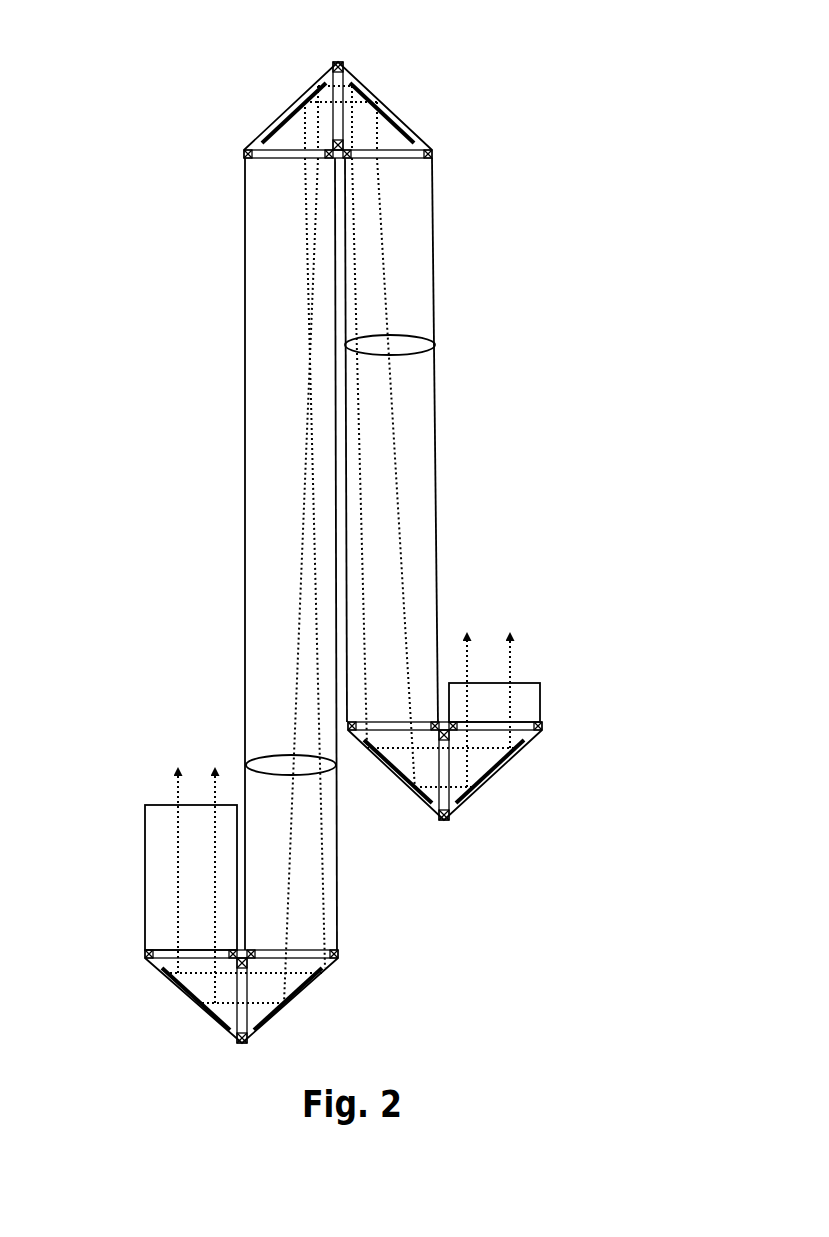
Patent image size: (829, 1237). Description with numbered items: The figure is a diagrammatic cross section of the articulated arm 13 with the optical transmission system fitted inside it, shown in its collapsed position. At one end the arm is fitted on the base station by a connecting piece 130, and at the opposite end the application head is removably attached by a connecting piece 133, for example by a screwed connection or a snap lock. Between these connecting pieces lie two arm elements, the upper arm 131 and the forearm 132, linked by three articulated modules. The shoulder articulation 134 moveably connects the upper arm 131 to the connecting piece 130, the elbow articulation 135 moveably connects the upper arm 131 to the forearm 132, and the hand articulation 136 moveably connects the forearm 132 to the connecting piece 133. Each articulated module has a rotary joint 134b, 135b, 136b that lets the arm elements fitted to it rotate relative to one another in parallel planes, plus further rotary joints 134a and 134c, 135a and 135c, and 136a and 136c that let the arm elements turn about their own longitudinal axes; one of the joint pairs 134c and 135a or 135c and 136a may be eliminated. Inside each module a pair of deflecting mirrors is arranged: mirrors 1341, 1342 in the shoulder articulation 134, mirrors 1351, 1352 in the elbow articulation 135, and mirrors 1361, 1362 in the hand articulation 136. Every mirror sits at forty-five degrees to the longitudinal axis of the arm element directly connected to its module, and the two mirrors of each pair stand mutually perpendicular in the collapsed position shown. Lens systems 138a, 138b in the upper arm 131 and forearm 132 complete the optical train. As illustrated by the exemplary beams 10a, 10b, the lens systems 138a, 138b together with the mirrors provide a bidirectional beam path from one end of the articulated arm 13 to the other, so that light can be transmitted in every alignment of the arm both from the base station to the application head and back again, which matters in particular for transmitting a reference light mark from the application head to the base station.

The articulated arm 13 is at (170, 618).
The connecting piece 130 is at (533, 695).
The upper arm 131 is at (428, 440).
The forearm 132 is at (255, 460).
The connecting piece 133 is at (148, 873).
The shoulder articulation 134 is at (502, 775).
The rotary joint 134a is at (545, 727).
The rotary joint 134b is at (444, 823).
The rotary joint 134c is at (390, 722).
The deflecting mirror 1341 is at (495, 775).
The deflecting mirror 1342 is at (398, 780).
The elbow articulation 135 is at (339, 86).
The rotary joint 135a is at (434, 155).
The rotary joint 135b is at (337, 60).
The rotary joint 135c is at (243, 155).
The deflecting mirror 1351 is at (400, 125).
The deflecting mirror 1352 is at (270, 125).
The hand articulation 136 is at (243, 1022).
The rotary joint 136a is at (341, 956).
The rotary joint 136b is at (242, 1046).
The rotary joint 136c is at (143, 955).
The deflecting mirror 1361 is at (310, 995).
The deflecting mirror 1362 is at (178, 993).
The lens system 138a is at (430, 347).
The lens system 138b is at (245, 760).
The exemplary beam 10a is at (365, 490).
The exemplary beam 10b is at (405, 550).